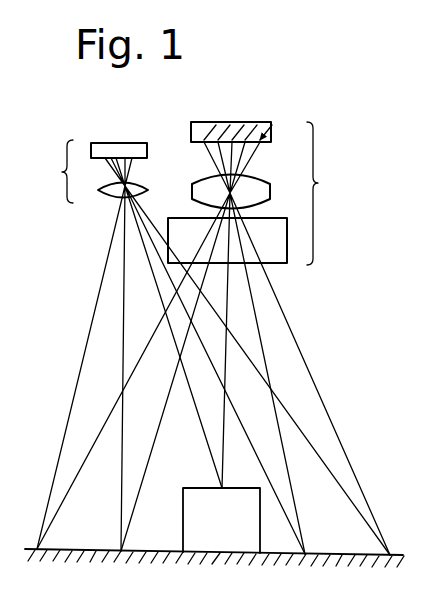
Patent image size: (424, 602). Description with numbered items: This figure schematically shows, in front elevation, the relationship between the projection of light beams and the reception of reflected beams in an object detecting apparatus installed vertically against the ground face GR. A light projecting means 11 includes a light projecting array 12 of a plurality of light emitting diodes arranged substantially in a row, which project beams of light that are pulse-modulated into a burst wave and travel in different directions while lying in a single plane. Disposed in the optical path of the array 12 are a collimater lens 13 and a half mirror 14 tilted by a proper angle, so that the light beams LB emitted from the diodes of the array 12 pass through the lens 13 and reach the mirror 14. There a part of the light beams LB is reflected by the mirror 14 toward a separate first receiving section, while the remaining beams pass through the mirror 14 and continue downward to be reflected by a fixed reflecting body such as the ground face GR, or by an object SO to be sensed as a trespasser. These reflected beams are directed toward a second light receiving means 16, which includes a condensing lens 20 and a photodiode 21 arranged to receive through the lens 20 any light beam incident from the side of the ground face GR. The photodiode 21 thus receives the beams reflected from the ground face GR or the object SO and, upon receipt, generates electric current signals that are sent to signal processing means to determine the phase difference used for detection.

The light projecting means 11 is at (250, 192).
The light projecting array 12 is at (245, 127).
The collimater lens 13 is at (200, 174).
The half mirror 14 is at (276, 258).
The second light receiving means 16 is at (211, 329).
The condensing lens 20 is at (105, 194).
The photodiode 21 is at (115, 143).
The light beams LB is at (203, 213).
The object SO is at (245, 522).
The ground GR is at (323, 551).